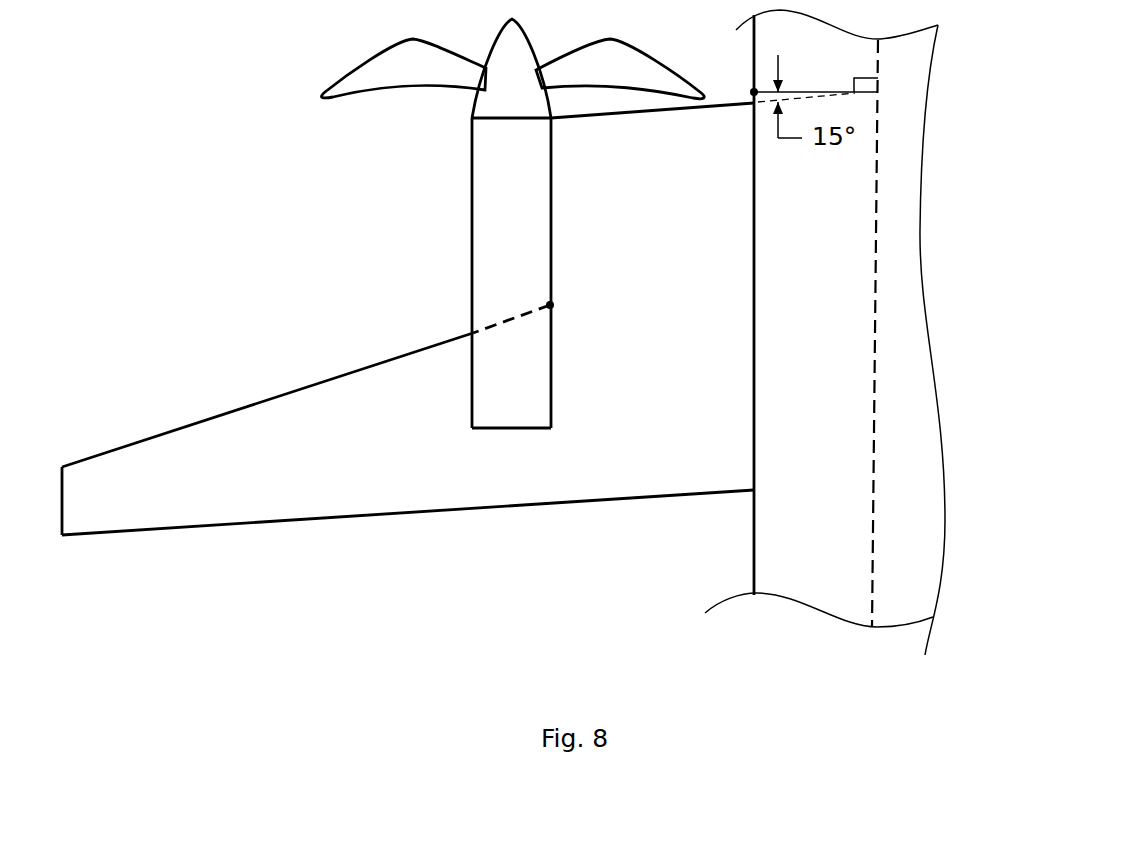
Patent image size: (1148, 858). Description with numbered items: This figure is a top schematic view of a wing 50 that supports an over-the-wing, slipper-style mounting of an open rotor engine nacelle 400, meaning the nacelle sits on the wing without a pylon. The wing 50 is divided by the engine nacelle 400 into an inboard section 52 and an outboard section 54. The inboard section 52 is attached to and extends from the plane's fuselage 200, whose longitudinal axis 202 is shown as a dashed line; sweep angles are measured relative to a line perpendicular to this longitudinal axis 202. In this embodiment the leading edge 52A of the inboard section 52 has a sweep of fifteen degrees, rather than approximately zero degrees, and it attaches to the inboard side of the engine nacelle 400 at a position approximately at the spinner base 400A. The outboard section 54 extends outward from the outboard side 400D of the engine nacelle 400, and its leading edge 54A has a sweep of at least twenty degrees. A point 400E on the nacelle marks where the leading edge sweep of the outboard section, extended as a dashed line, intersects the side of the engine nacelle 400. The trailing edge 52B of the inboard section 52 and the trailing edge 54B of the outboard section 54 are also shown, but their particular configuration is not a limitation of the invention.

The wing 50 is at (226, 232).
The inboard section 52 is at (593, 348).
The leading edge 52A is at (652, 156).
The trailing edge 52B is at (571, 546).
The outboard section 54 is at (408, 465).
The leading edge 54A is at (267, 400).
The trailing edge 54B is at (408, 544).
The fuselage 200 is at (790, 332).
The longitudinal axis 202 is at (804, 352).
The engine nacelle 400 is at (513, 223).
The spinner base 400A is at (450, 148).
The outboard side 400D is at (405, 273).
The point 400E is at (565, 328).